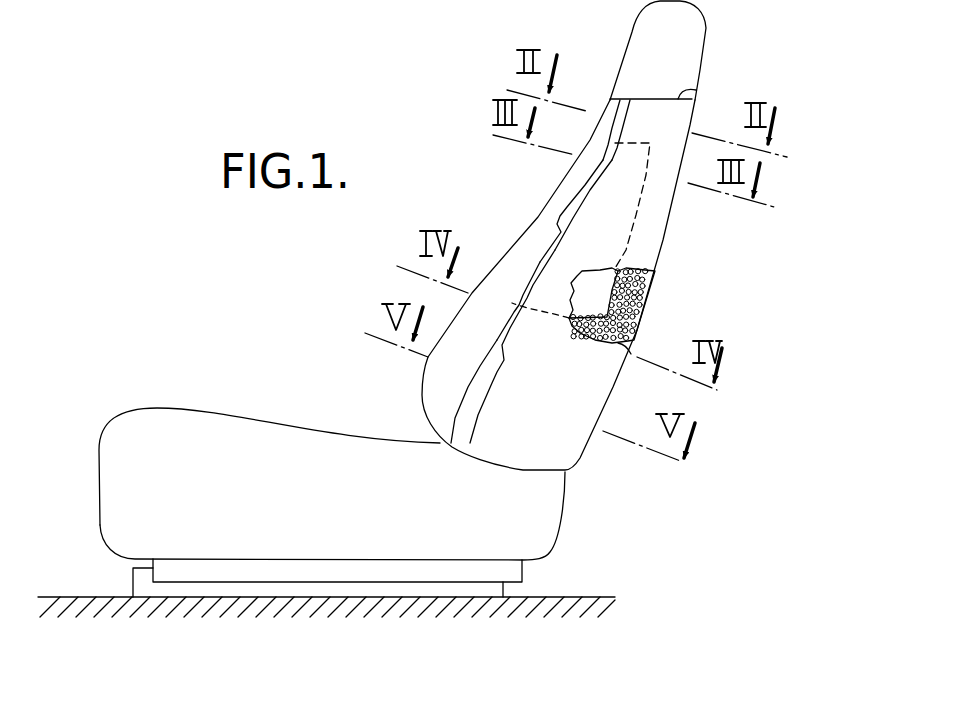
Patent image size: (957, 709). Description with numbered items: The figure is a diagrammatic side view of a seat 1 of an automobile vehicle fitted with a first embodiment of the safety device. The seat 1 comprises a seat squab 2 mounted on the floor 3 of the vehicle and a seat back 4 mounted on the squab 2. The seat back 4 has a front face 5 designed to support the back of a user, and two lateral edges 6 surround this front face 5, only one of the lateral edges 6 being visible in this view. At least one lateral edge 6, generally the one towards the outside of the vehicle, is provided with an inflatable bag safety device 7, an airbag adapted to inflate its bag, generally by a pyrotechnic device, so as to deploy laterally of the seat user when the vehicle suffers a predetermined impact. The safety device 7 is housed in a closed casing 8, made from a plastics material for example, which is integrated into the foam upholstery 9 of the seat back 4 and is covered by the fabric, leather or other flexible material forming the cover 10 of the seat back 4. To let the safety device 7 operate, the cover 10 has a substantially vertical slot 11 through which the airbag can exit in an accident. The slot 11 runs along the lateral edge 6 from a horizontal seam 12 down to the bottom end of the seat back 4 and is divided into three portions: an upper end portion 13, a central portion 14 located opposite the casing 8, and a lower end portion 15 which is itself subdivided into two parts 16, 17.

The seat 1 is at (320, 325).
The seat squab 2 is at (200, 437).
The floor 3 is at (583, 602).
The seat back 4 is at (705, 38).
The front face 5 is at (538, 218).
The lateral edges 6 is at (575, 365).
The inflatable bag safety device 7 is at (612, 228).
The closed casing 8 is at (600, 290).
The foam upholstery 9 is at (640, 302).
The cover 10 is at (640, 332).
The slot 11 is at (612, 158).
The horizontal seam 12 is at (684, 92).
The upper end portion 13 is at (612, 122).
The central portion 14 is at (560, 220).
The lower end portion 15 is at (512, 346).
The first part of lower end portion 16 is at (525, 301).
The second part of lower end portion 17 is at (468, 391).